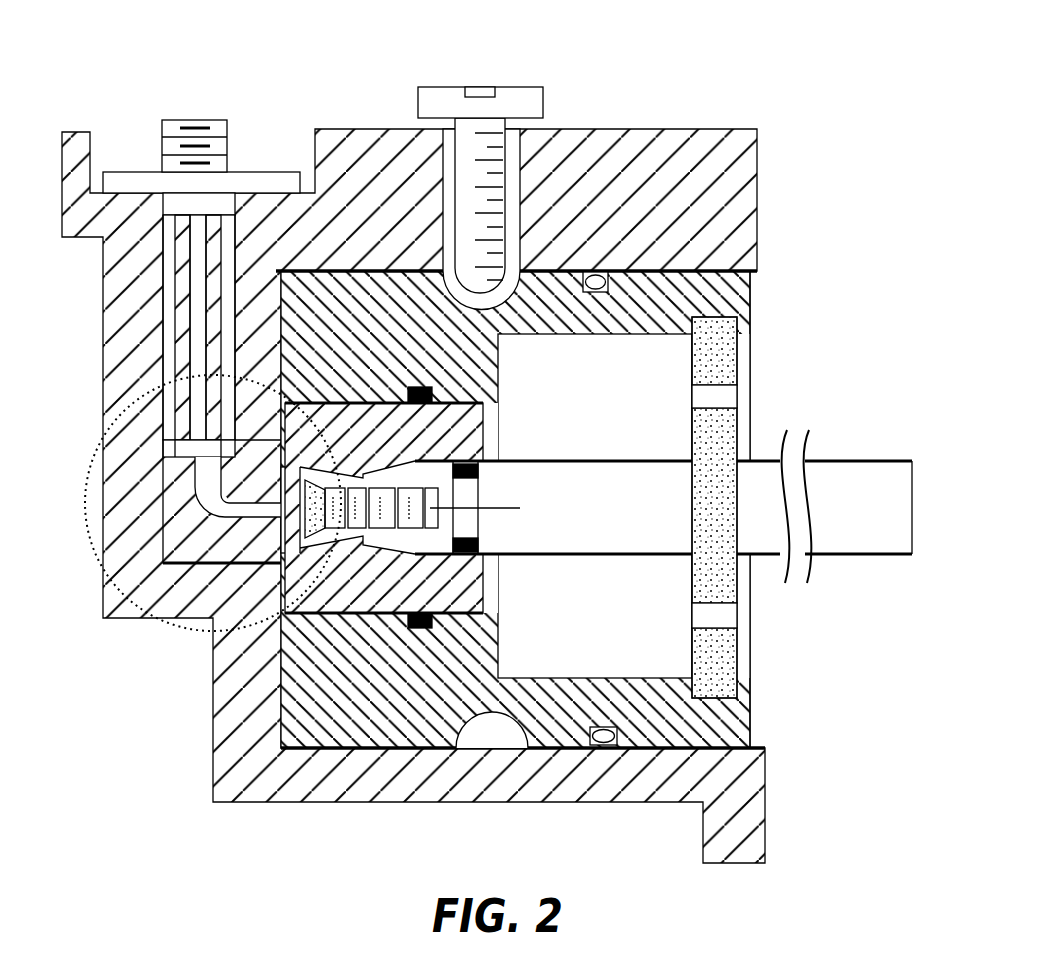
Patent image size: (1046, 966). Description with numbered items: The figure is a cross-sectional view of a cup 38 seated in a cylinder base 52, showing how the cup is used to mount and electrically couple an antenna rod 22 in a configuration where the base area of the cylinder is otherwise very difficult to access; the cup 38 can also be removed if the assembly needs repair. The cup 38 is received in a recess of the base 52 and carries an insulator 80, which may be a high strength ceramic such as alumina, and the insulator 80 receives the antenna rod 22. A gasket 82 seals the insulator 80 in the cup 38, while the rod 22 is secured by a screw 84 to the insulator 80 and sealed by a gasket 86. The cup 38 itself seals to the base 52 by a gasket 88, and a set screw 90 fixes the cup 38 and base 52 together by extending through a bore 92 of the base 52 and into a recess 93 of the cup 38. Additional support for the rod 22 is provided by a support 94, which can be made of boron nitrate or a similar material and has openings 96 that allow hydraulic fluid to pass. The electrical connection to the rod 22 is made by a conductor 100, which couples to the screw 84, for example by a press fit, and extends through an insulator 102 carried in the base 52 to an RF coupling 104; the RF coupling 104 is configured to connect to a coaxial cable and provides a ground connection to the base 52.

The antenna rod 22 is at (853, 472).
The cup 38 is at (753, 708).
The cylinder base 52 is at (722, 148).
The insulator 80 is at (488, 612).
The gasket 82 is at (432, 390).
The screw 84 is at (432, 507).
The gasket 86 is at (483, 457).
The gasket 88 is at (595, 268).
The set screw 90 is at (480, 85).
The bore 92 is at (440, 177).
The recess 93 is at (490, 733).
The support 94 is at (717, 350).
The openings 96 is at (715, 397).
The conductor 100 is at (233, 567).
The insulator 102 is at (167, 537).
The RF coupling 104 is at (162, 143).